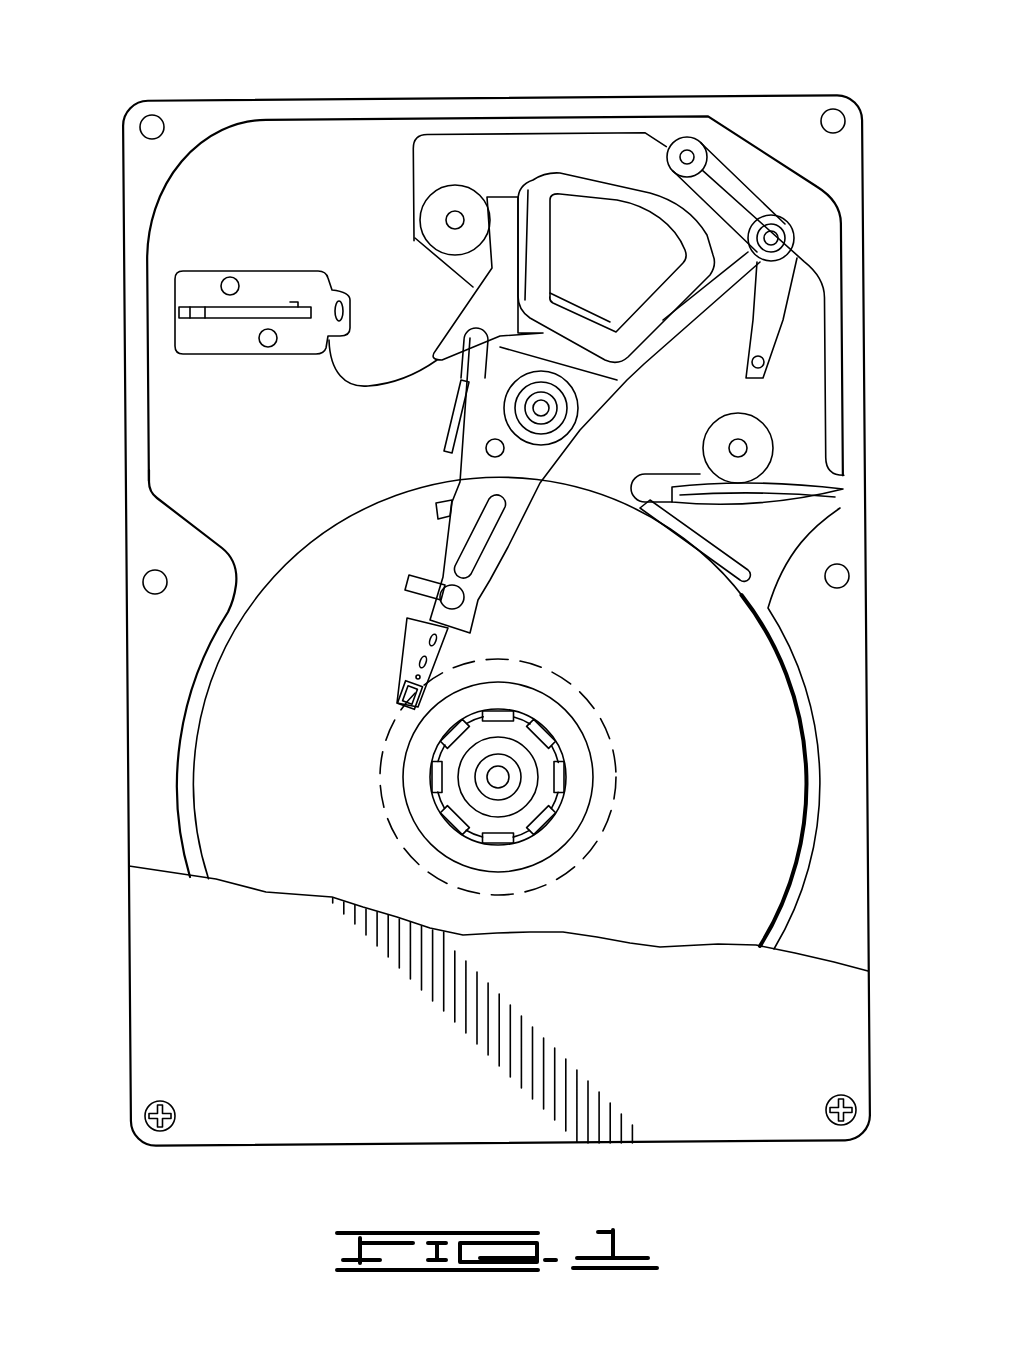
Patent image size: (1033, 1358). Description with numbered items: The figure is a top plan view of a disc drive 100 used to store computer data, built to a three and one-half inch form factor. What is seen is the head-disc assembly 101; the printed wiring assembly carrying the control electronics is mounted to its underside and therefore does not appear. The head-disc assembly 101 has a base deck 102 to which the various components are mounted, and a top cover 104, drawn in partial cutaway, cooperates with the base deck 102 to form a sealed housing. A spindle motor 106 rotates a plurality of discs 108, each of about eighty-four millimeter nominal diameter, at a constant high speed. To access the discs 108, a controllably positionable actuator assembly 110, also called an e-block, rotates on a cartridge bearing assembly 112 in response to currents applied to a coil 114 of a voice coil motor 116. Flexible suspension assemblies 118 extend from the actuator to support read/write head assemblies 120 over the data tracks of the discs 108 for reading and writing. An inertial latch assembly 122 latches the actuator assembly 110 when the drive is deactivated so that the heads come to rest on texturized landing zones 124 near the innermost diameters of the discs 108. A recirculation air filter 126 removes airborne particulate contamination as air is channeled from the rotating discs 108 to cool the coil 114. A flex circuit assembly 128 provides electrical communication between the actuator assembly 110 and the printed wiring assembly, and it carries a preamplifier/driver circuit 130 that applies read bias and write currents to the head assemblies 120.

The disc drive 100 is at (233, 58).
The head-disc assembly 101 is at (186, 123).
The base deck 102 is at (183, 432).
The top cover 104 is at (183, 944).
The spindle motor 106 is at (529, 771).
The discs 108 is at (780, 787).
The actuator assembly 110 is at (499, 489).
The cartridge bearing assembly 112 is at (541, 412).
The coil 114 is at (567, 179).
The voice coil motor 116 is at (626, 153).
The flexible suspension assemblies 118 is at (394, 641).
The read/write head assemblies 120 is at (400, 689).
The inertial latch assembly 122 is at (773, 294).
The texturized landing zones 124 is at (576, 698).
The recirculation air filter 126 is at (770, 513).
The flex circuit assembly 128 is at (375, 387).
The preamplifier/driver circuit 130 is at (447, 402).